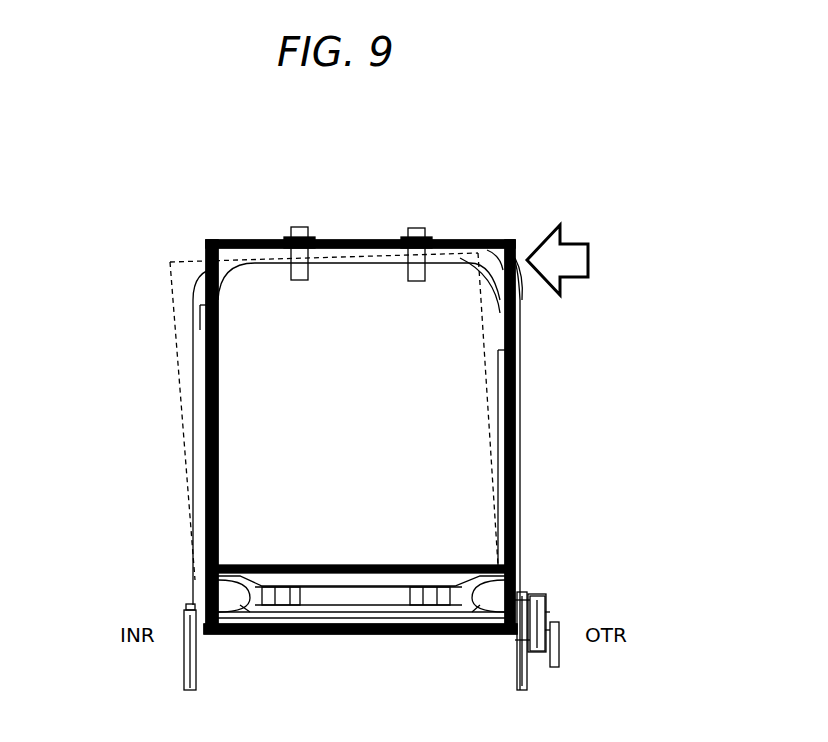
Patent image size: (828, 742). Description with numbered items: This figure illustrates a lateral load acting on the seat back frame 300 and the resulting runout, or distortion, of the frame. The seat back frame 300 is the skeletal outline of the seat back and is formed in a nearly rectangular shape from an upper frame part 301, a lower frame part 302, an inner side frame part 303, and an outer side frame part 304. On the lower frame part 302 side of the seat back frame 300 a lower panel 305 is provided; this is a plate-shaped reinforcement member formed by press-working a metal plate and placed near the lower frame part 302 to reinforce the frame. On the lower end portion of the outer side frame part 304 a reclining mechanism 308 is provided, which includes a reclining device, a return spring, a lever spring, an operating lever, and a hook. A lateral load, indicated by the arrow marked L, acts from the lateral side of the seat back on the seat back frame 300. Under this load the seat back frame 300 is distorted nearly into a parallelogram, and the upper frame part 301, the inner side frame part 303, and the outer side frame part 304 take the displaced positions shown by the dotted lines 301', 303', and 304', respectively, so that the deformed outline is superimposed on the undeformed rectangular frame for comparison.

The seat back frame 300 is at (499, 220).
The upper frame part 301 is at (360, 238).
The dotted line (upper frame part in deformed state) 301' is at (324, 219).
The lower frame part 302 is at (330, 636).
The inner side frame part 303 is at (154, 436).
The dotted line (inner side frame part in deformed state) 303' is at (138, 421).
The outer side frame part 304 is at (565, 436).
The dotted line (outer side frame part in deformed state) 304' is at (441, 409).
The lower panel 305 is at (361, 580).
The reclining mechanism 308 is at (545, 603).